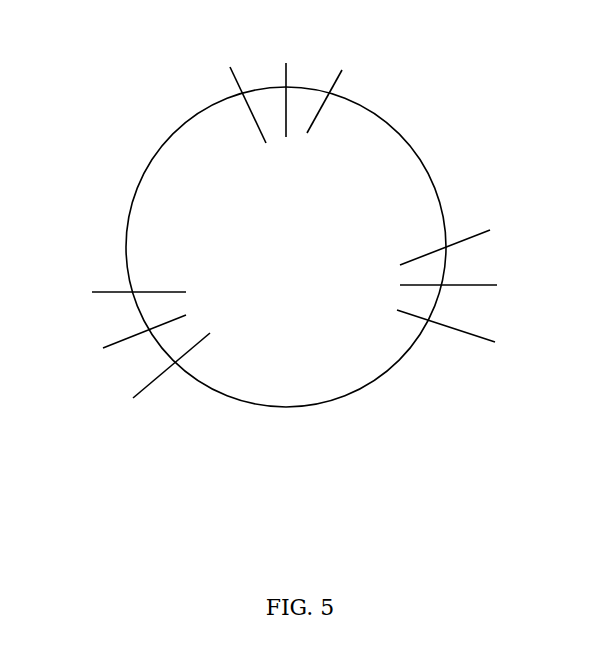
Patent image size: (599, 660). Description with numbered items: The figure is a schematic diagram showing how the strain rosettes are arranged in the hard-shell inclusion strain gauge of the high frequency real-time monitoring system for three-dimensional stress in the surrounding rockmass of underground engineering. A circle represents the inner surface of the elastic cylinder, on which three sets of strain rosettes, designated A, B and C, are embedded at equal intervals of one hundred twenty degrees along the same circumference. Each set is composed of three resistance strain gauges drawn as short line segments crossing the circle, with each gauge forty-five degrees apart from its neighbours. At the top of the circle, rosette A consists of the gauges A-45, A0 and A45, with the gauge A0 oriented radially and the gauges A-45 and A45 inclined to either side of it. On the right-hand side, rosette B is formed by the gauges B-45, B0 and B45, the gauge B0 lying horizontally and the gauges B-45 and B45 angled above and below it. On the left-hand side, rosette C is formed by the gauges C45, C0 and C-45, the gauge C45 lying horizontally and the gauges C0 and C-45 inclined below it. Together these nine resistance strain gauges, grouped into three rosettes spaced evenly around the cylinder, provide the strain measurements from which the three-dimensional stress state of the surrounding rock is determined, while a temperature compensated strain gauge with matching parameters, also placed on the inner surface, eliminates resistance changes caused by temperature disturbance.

The resistance strain gauge of strain rosette A at -45° A-45 is at (209, 75).
The resistance strain gauge of strain rosette A at 0° A0 is at (298, 72).
The resistance strain gauge of strain rosette A at 45° A45 is at (364, 70).
The resistance strain gauge of strain rosette B at -45° B-45 is at (484, 236).
The resistance strain gauge of strain rosette B at 0° B0 is at (476, 299).
The resistance strain gauge of strain rosette B at 45° B45 is at (477, 344).
The resistance strain gauge of strain rosette C at 45° C45 is at (103, 286).
The resistance strain gauge of strain rosette C at 0° C0 is at (117, 344).
The resistance strain gauge of strain rosette C at -45° C-45 is at (144, 390).